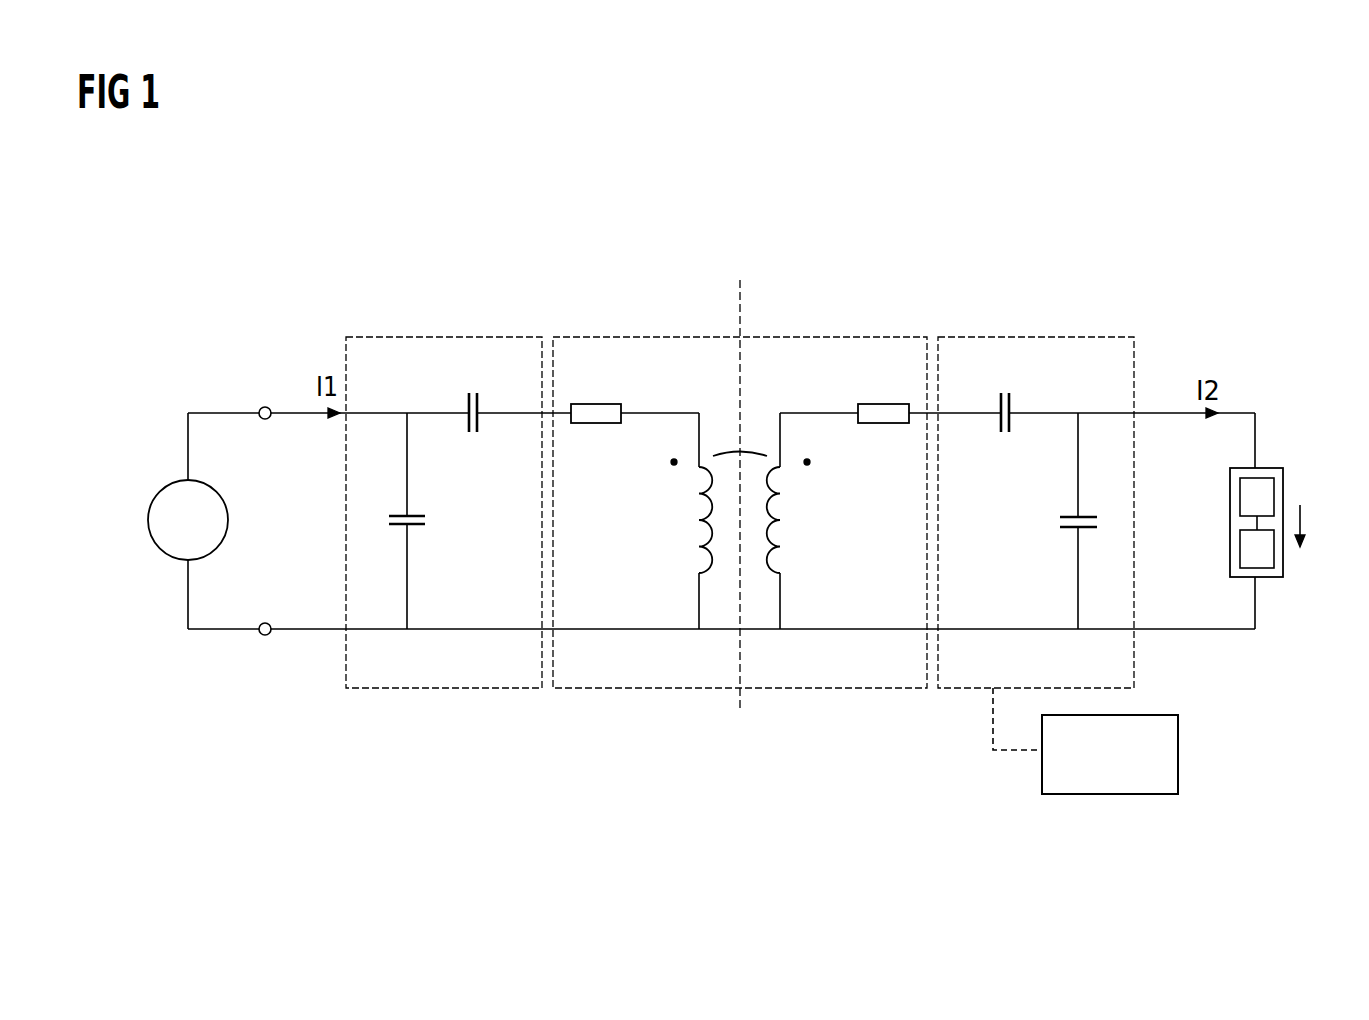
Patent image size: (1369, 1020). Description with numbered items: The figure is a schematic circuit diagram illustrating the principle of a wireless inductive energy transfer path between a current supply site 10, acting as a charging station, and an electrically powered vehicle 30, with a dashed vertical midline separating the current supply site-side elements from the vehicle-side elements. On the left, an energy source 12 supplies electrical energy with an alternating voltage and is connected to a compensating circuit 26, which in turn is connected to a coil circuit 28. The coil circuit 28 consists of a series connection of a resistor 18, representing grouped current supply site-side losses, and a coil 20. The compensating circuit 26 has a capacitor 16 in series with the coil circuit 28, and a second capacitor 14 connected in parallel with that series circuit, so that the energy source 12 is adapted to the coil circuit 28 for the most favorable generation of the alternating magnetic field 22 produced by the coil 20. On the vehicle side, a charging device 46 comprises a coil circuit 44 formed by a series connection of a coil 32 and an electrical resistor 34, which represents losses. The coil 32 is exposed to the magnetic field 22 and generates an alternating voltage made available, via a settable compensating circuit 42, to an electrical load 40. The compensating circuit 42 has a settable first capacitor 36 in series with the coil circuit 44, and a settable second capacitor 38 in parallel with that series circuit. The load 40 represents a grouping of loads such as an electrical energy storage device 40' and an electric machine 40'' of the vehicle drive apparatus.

The current supply site 10 is at (288, 294).
The energy source 12 is at (148, 520).
The second capacitor 14 is at (398, 527).
The capacitor 16 is at (478, 403).
The resistor 18 is at (612, 404).
The coil 20 is at (700, 522).
The alternating magnetic field 22 is at (753, 453).
The compensating circuit 26 is at (409, 337).
The coil circuit 28 is at (678, 337).
The electrically powered vehicle 30 is at (1242, 297).
The coil 32 is at (780, 522).
The electrical resistor 34 is at (897, 404).
The first capacitor 36 is at (1010, 403).
The second capacitor 38 is at (1087, 530).
The electrical load 40 is at (1265, 529).
The electrical energy storage device 40' is at (1292, 479).
The electric machine 40'' is at (1228, 565).
The compensating circuit 42 is at (978, 337).
The coil circuit 44 is at (848, 337).
The charging device 46 is at (1136, 295).